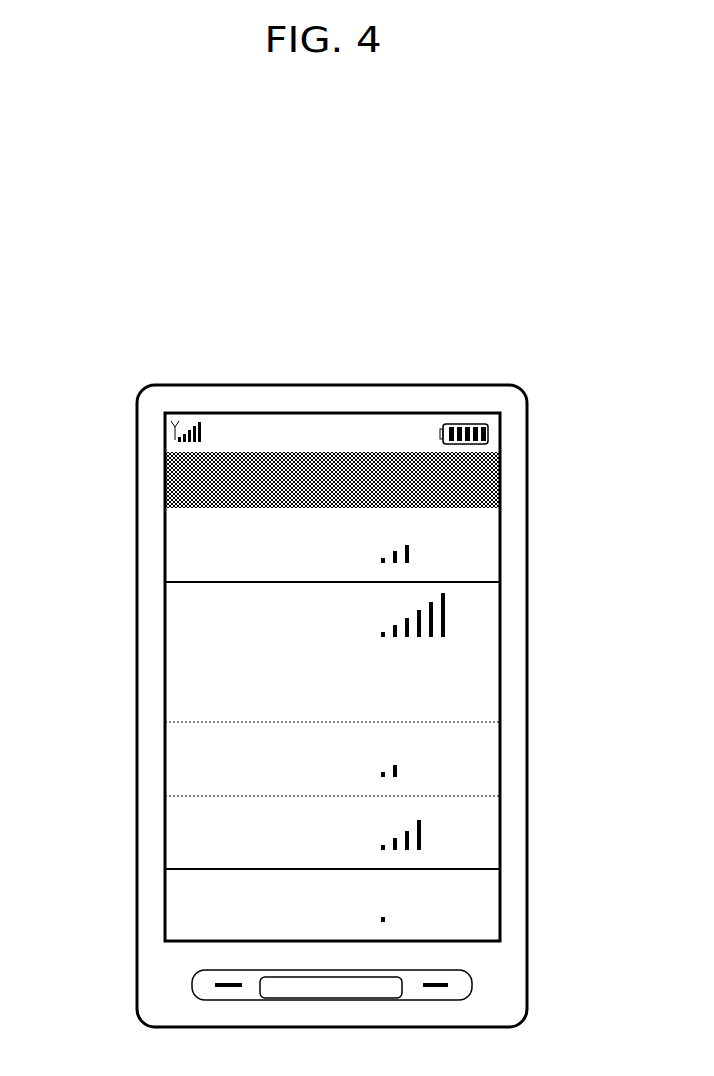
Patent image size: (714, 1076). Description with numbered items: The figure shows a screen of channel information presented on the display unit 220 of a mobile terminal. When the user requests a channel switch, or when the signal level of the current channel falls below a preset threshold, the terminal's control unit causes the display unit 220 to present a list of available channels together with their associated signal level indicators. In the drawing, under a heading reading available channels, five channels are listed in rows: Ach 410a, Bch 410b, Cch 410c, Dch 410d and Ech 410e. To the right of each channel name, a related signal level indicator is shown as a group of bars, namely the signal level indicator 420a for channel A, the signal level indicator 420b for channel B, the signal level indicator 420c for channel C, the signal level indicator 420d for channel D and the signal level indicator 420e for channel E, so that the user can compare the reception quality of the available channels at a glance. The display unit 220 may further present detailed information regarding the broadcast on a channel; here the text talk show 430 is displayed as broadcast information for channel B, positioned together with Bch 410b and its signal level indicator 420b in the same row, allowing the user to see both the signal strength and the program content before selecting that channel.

The display unit 220 is at (500, 411).
The Ach channel entry 410a is at (184, 541).
The Bch channel entry 410b is at (184, 611).
The Cch channel entry 410c is at (184, 757).
The Dch channel entry 410d is at (184, 831).
The Ech channel entry 410e is at (184, 905).
The signal level indicator 420a is at (410, 548).
The signal level indicator 420b is at (446, 614).
The signal level indicator 420c is at (400, 768).
The signal level indicator 420d is at (420, 830).
The signal level indicator 420e is at (388, 915).
The talk show broadcast information 430 is at (385, 676).